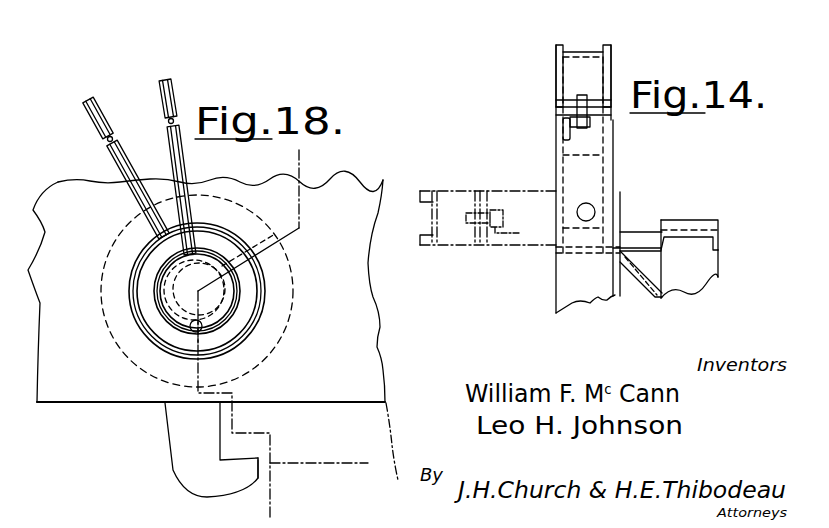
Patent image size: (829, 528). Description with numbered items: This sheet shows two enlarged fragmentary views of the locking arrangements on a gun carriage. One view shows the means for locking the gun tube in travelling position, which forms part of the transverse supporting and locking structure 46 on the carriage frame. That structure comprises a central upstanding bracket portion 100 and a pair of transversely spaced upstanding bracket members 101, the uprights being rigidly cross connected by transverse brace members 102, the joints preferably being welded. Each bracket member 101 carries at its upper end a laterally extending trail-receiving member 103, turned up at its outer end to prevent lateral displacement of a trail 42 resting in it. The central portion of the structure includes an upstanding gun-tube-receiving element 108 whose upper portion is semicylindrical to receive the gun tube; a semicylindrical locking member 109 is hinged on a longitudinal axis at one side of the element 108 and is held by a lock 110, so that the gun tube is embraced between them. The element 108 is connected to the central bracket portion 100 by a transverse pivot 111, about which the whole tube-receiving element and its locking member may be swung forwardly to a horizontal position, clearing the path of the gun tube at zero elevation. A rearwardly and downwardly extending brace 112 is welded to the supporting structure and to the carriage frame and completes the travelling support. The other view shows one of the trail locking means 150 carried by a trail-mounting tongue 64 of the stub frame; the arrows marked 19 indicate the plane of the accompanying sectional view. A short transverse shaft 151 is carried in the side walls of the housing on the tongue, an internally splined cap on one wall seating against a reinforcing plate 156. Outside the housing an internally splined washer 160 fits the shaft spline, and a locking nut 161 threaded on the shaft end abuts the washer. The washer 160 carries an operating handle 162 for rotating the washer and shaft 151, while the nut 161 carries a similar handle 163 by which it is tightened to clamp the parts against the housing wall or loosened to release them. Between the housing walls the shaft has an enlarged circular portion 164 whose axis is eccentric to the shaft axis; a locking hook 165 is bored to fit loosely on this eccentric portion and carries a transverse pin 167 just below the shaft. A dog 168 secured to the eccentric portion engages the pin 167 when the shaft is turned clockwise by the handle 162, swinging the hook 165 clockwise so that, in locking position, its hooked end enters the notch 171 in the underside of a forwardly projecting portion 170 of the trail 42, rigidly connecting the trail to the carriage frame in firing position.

In FIG. 18, the section line 19- 19 is at (280, 148).
In FIG. 18, the trails 42 is at (372, 463).
In FIG. 14, the supporting and locking structure 46 is at (553, 298).
In FIG. 18, the supporting tongues 64 is at (95, 182).
In FIG. 14, the central upstanding bracket portion 100 is at (573, 277).
In FIG. 14, the upstanding bracket members 101 is at (703, 265).
In FIG. 14, the transverse brace members 102 is at (630, 238).
In FIG. 14, the trail-receiving member 103 is at (695, 223).
In FIG. 14, the gun-tube-receiving element 108 is at (556, 166).
In FIG. 14, the locking member 109 is at (580, 50).
In FIG. 14, the lock 110 is at (563, 137).
In FIG. 14, the transverse pivot 111 is at (591, 208).
In FIG. 14, the brace 112 is at (639, 283).
In FIG. 18, the trail locking means 150 is at (160, 430).
In FIG. 18, the transverse shaft 151 is at (224, 299).
In FIG. 18, the reinforcing plate 156 is at (288, 334).
In FIG. 18, the internally splined washer 160 is at (159, 266).
In FIG. 18, the locking nut 161 is at (170, 292).
In FIG. 18, the operating handle 162 is at (96, 108).
In FIG. 18, the handle 163 is at (178, 87).
In FIG. 18, the enlarged circular eccentric portion 164 is at (168, 311).
In FIG. 18, the locking hook 165 is at (183, 468).
In FIG. 18, the pin 167 is at (200, 331).
In FIG. 18, the dog 168 is at (224, 280).
In FIG. 18, the forwardly projecting portion 170 is at (266, 415).
In FIG. 18, the notch 171 is at (260, 458).